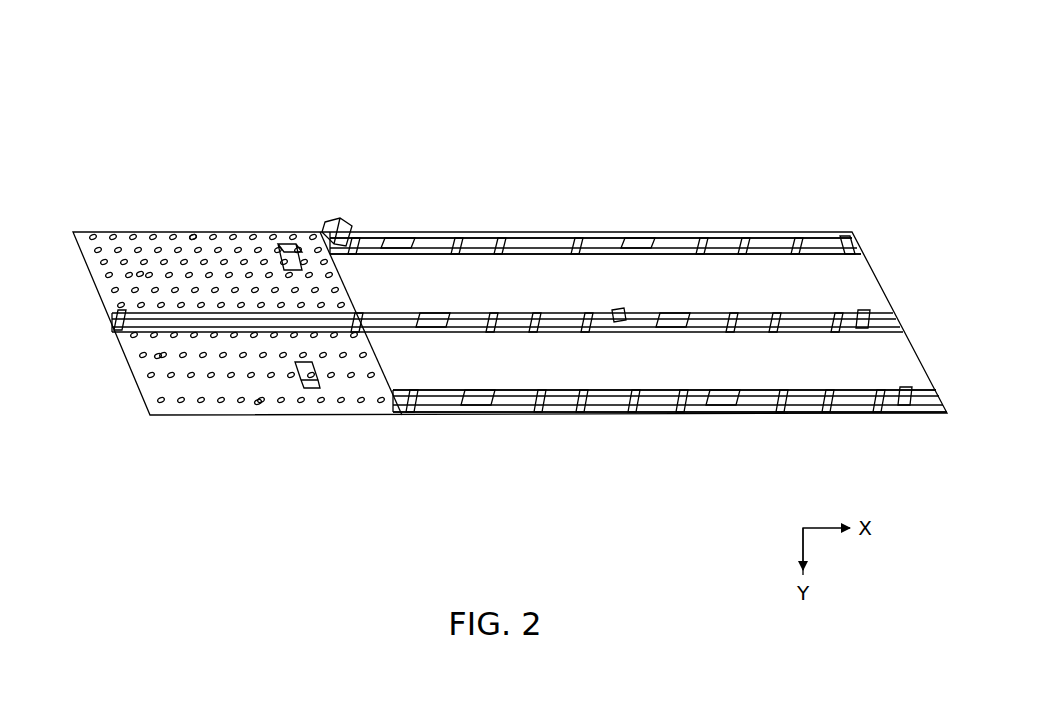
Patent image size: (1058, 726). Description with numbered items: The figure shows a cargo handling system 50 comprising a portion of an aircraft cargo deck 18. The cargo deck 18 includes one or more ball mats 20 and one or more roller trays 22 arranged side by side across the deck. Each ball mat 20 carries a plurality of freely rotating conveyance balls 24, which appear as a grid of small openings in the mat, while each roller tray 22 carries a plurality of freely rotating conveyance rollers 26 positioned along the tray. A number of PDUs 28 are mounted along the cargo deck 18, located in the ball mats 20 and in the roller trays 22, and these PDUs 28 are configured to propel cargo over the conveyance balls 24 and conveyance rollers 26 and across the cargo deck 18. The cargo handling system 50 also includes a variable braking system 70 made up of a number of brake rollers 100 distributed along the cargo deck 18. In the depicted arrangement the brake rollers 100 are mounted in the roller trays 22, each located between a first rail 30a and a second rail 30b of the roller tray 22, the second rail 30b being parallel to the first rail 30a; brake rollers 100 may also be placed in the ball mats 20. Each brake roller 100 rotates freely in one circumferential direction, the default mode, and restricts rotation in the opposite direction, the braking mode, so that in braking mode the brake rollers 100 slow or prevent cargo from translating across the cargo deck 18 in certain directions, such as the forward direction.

The cargo deck 18 is at (266, 110).
The ball mat 20 is at (127, 265).
The roller tray 22 is at (757, 232).
The conveyance ball 24 is at (193, 236).
The conveyance roller 26 is at (455, 238).
The PDU 28 is at (278, 244).
The first rail 30a is at (848, 236).
The second rail 30b is at (860, 256).
The cargo handling system 50 is at (505, 105).
The variable braking system 70 is at (604, 188).
The brake roller 100 is at (352, 238).